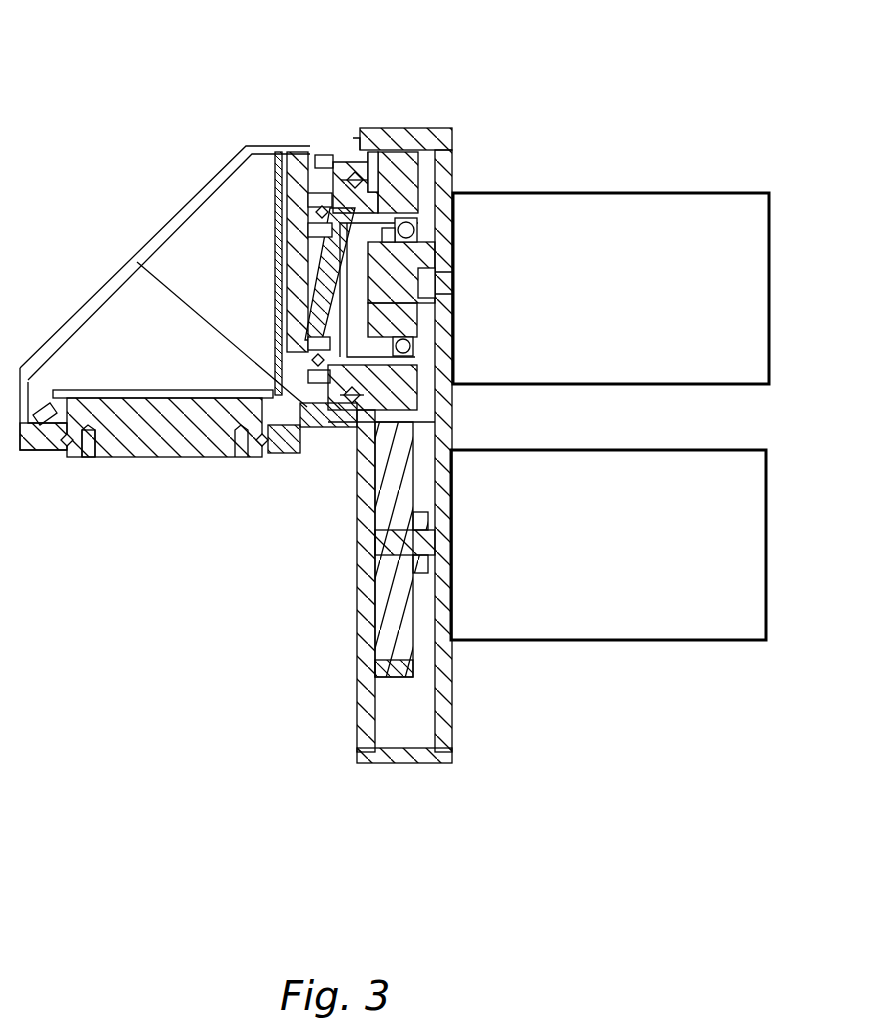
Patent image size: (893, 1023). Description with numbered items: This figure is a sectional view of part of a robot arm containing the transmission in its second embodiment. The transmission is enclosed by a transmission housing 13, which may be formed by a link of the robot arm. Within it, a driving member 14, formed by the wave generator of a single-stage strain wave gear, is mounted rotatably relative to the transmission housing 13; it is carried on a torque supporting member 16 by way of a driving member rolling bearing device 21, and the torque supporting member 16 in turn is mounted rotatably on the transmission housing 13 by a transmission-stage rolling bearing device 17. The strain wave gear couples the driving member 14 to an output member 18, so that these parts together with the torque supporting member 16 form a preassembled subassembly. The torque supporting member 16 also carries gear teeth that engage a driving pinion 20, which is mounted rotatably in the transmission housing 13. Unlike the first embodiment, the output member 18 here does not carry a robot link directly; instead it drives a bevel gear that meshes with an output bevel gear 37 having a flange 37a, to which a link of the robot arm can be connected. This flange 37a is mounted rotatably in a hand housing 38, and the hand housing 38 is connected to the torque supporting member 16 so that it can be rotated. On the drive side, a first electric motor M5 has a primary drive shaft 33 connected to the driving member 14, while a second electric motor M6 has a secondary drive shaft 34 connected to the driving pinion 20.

The transmission housing 13 is at (395, 766).
The driving member 14 is at (402, 263).
The torque supporting member 16 is at (375, 203).
The transmission-stage rolling bearing device 17 is at (380, 157).
The output member 18 is at (322, 268).
The driving pinion 20 is at (386, 619).
The driving member rolling bearing device 21 is at (405, 349).
The primary drive shaft 33 is at (436, 283).
The secondary drive shaft 34 is at (440, 538).
The output bevel gear 37 is at (178, 421).
The flange 37a is at (82, 457).
The hand housing 38 is at (132, 262).
The first electric motor M5 is at (757, 213).
The second electric motor M6 is at (717, 622).